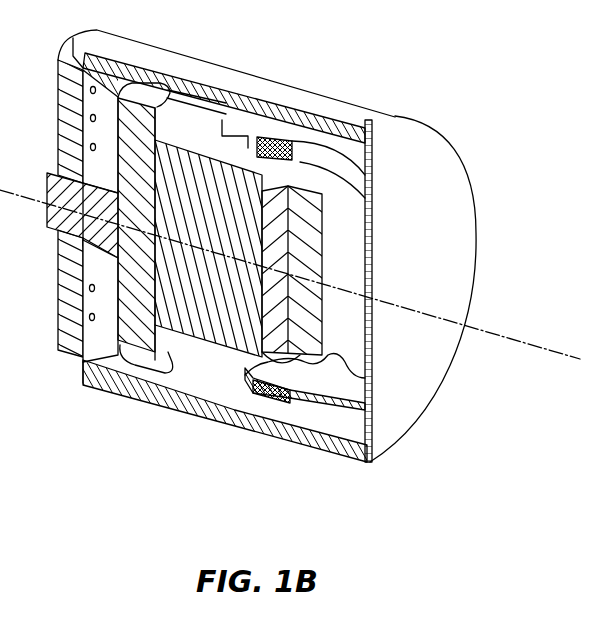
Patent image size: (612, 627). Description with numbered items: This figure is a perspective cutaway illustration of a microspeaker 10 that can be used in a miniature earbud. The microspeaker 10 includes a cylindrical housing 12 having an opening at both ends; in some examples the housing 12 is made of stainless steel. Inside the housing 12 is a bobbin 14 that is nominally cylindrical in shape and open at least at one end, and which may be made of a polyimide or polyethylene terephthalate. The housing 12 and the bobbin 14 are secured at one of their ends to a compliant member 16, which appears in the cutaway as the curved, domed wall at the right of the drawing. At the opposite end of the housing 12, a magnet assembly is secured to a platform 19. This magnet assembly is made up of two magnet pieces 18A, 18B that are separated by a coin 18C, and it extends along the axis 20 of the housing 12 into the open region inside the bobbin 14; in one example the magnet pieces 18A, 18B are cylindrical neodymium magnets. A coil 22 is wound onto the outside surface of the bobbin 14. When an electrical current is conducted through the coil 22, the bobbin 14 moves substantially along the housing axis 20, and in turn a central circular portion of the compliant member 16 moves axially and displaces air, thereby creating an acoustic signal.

The microspeaker 10 is at (527, 156).
The cylindrical housing 12 is at (259, 89).
The bobbin 14 is at (342, 406).
The compliant member 16 is at (478, 236).
The magnet piece 18A is at (178, 347).
The magnet piece 18B is at (370, 376).
The coin 18C is at (285, 400).
The platform 19 is at (120, 377).
The housing axis 20 is at (518, 338).
The coil 22 is at (292, 140).